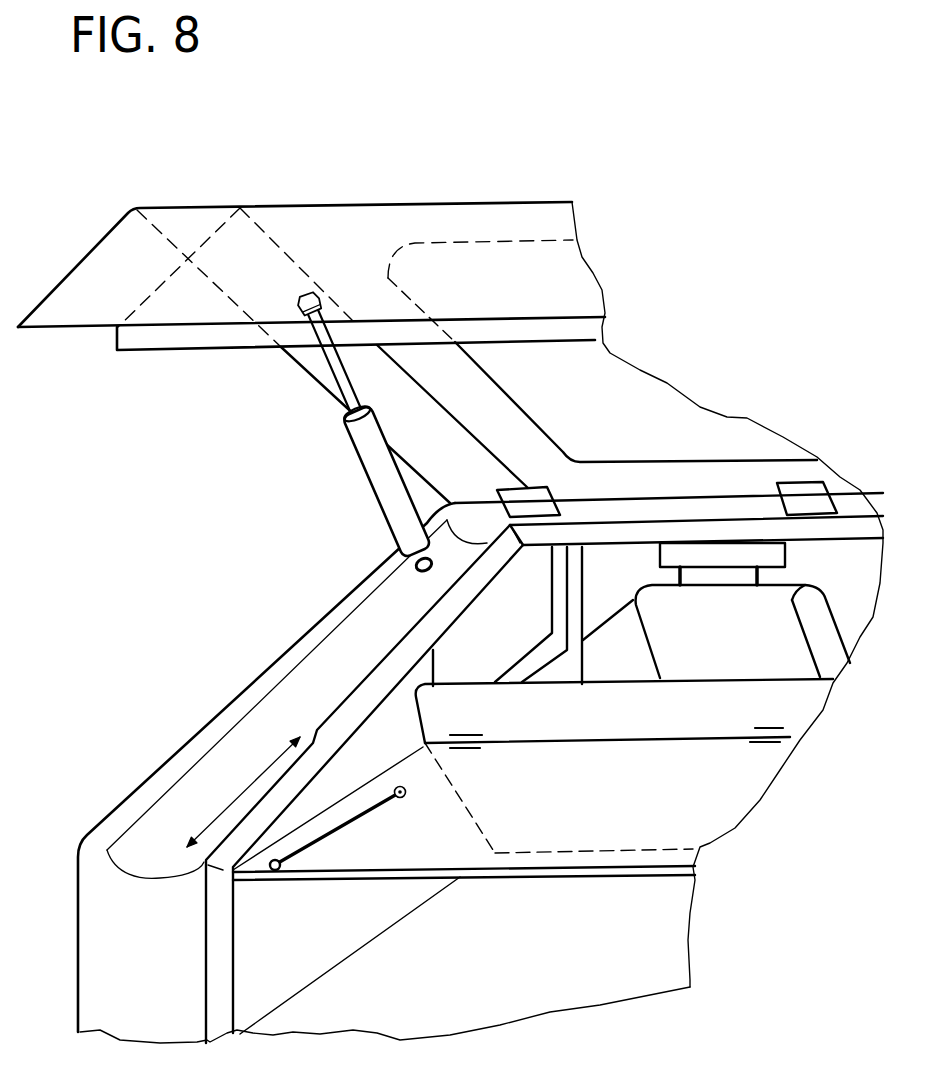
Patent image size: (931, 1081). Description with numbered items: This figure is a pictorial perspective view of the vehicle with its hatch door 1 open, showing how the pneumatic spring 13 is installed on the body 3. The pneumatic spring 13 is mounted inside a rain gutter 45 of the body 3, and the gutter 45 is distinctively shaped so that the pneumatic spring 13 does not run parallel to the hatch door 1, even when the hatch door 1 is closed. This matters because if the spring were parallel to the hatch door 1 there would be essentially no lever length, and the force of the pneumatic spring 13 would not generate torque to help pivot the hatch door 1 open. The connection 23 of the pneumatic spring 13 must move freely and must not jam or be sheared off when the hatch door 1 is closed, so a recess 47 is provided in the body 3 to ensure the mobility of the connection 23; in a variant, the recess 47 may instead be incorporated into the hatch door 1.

The hatch door 1 is at (180, 305).
The body 3 is at (223, 708).
The pneumatic spring 13 is at (354, 465).
The connection 23 is at (367, 817).
The rain gutter 45 is at (330, 662).
The recess 47 is at (240, 795).